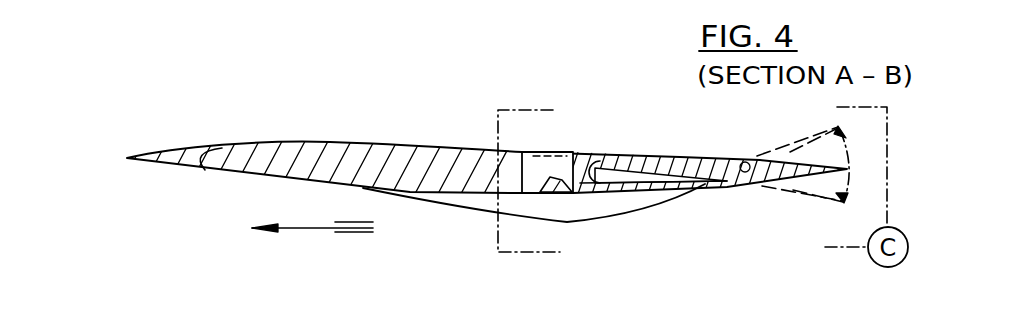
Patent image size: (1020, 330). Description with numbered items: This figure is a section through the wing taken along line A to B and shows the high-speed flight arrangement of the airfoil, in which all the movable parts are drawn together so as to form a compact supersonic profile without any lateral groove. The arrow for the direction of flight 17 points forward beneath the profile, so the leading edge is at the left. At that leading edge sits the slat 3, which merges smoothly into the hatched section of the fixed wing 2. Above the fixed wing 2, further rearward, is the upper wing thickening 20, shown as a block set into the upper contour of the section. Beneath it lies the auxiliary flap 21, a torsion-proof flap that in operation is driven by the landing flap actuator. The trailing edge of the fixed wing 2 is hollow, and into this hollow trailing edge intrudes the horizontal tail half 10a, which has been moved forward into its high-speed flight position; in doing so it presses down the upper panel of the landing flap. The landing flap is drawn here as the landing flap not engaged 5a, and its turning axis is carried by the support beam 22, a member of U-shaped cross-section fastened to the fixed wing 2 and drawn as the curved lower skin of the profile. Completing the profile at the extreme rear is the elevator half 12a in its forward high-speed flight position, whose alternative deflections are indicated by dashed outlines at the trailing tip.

The fixed wing 2 is at (400, 153).
The slat 3 is at (173, 157).
The landing flap not engaged 5a is at (677, 195).
The horizontal tail half in forward high-speed flight position 10a is at (653, 158).
The elevator half in forward high-speed flight position 12a is at (790, 173).
The direction of flight 17 is at (317, 228).
The upper wing thickening 20 is at (560, 157).
The auxiliary flap 21 is at (557, 190).
The support beam for the landing flaps 22 is at (467, 205).